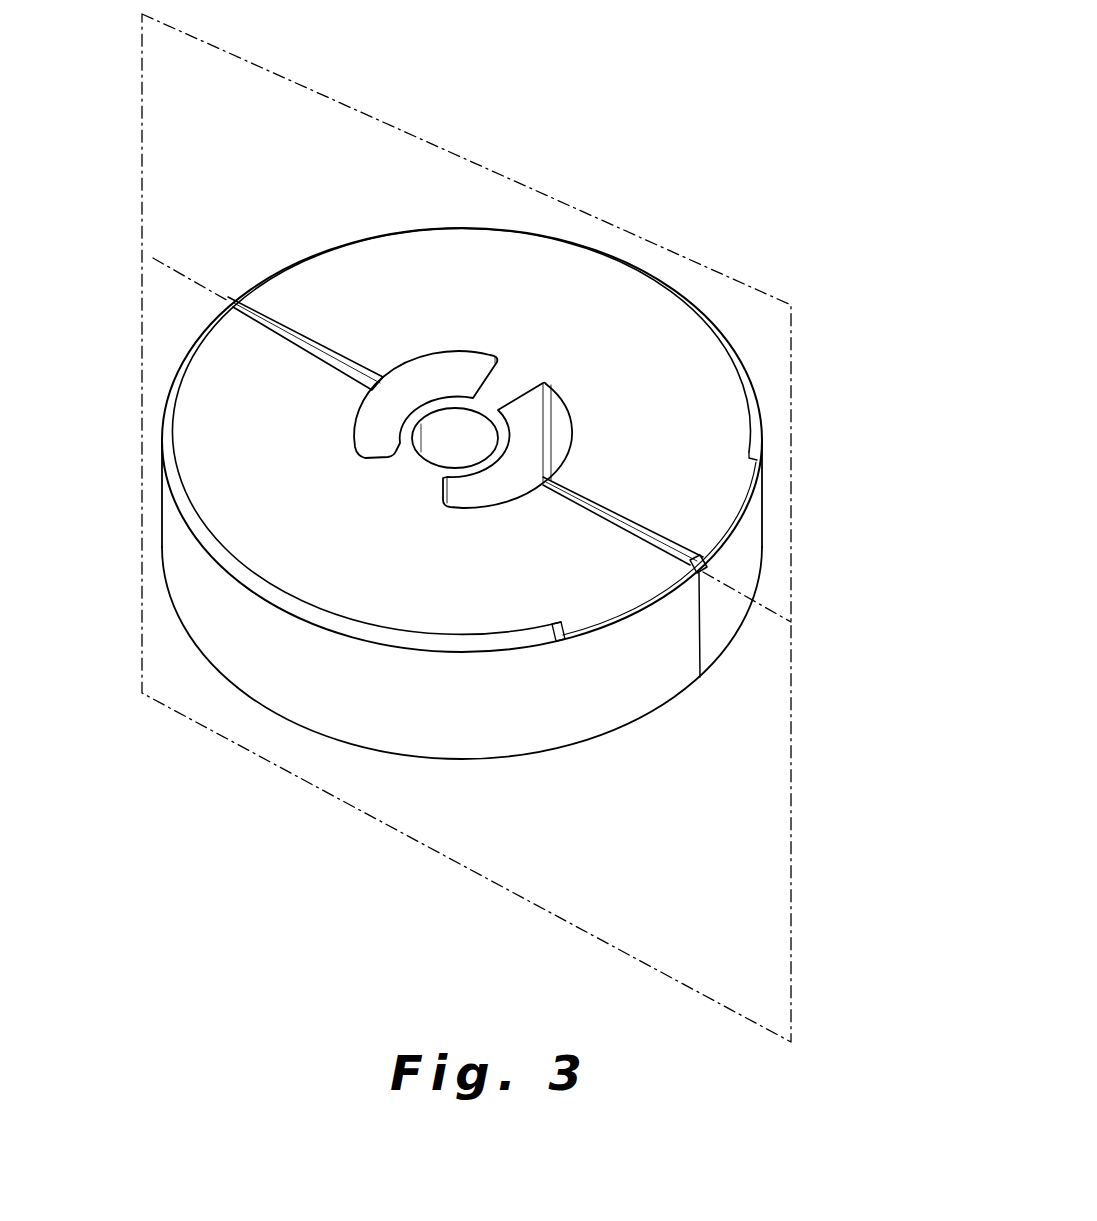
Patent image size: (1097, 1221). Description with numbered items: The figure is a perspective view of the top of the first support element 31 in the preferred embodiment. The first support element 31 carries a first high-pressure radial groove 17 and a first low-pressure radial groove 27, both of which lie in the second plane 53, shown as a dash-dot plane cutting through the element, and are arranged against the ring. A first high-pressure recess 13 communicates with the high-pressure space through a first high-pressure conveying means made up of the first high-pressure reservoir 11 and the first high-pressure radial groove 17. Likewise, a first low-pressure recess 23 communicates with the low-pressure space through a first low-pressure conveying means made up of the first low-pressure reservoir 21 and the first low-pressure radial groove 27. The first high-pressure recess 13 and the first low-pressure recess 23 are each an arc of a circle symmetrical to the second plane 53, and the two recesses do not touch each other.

The first high-pressure reservoir 11 is at (562, 437).
The first high-pressure recess 13 is at (704, 571).
The first high-pressure radial groove 17 is at (657, 540).
The first low-pressure reservoir 21 is at (442, 383).
The first low-pressure recess 23 is at (203, 530).
The first low-pressure radial groove 27 is at (327, 355).
The first support element 31 is at (802, 259).
The second plane 53 is at (598, 214).